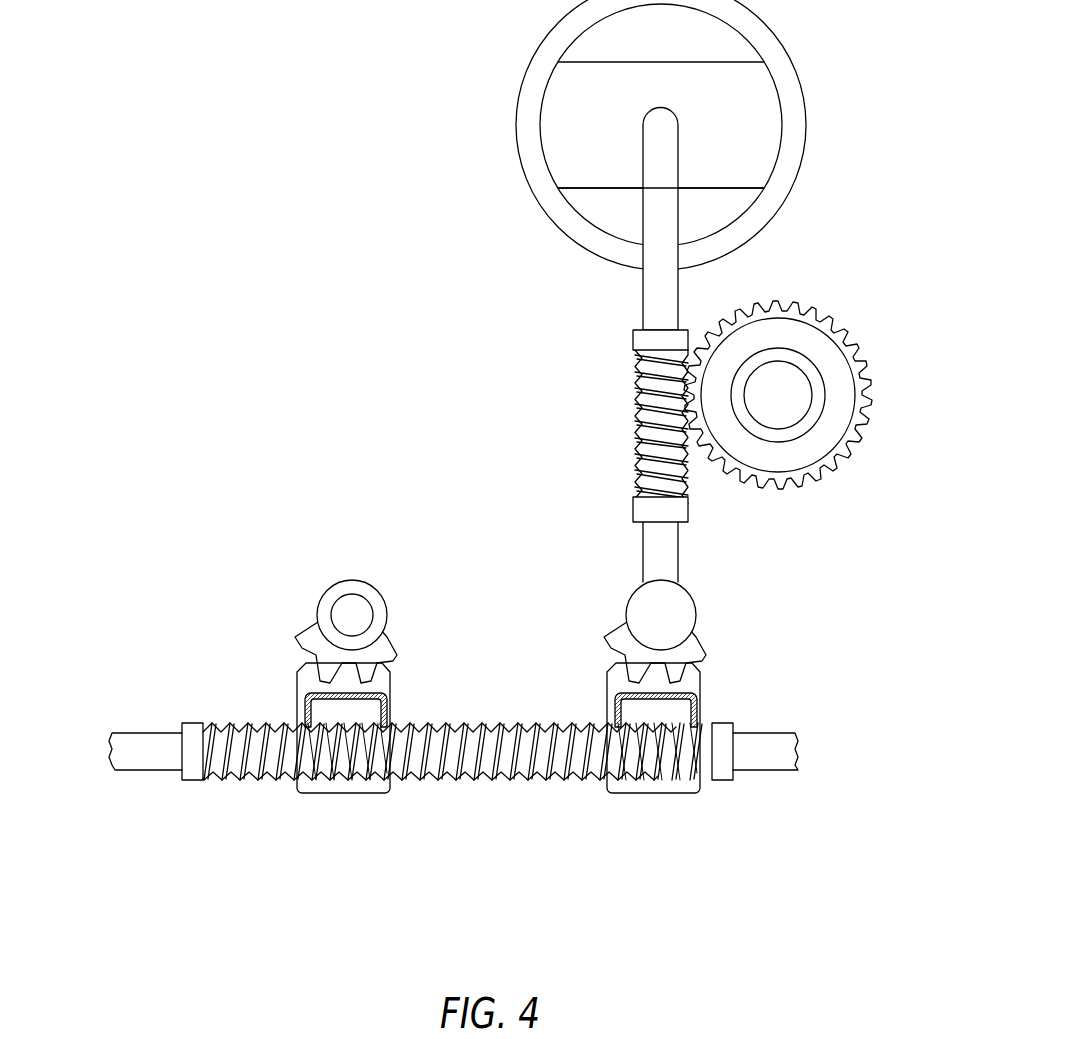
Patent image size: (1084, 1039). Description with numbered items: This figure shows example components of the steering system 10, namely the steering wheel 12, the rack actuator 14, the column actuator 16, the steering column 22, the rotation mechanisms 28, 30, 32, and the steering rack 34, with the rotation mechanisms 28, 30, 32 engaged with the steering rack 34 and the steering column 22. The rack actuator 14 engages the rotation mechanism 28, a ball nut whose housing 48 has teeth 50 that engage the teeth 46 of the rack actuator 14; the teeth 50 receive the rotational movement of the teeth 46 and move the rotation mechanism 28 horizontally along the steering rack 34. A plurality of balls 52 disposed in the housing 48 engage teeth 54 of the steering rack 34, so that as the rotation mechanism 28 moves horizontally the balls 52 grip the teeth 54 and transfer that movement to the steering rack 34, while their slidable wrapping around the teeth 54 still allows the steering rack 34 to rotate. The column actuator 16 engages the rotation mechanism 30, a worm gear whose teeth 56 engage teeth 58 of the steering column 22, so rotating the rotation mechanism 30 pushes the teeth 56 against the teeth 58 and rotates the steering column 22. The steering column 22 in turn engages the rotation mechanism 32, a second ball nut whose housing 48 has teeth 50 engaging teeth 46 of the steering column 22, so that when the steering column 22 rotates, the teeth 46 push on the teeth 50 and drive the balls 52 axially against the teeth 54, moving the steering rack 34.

The steering system 10 is at (263, 132).
The steering wheel 12 is at (775, 47).
The rack actuator 14 is at (352, 612).
The column actuator 16 is at (778, 380).
The steering column 22 is at (657, 307).
The rotation mechanism 28 is at (386, 800).
The rotation mechanism 30 is at (848, 319).
The rotation mechanism 32 is at (696, 800).
The steering rack 34 is at (778, 746).
The teeth 46 is at (386, 655).
The housing 48 is at (388, 706).
The teeth 50 is at (375, 678).
The balls 52 is at (321, 768).
The teeth 54 is at (288, 773).
The teeth 56 is at (692, 426).
The teeth 58 is at (672, 405).